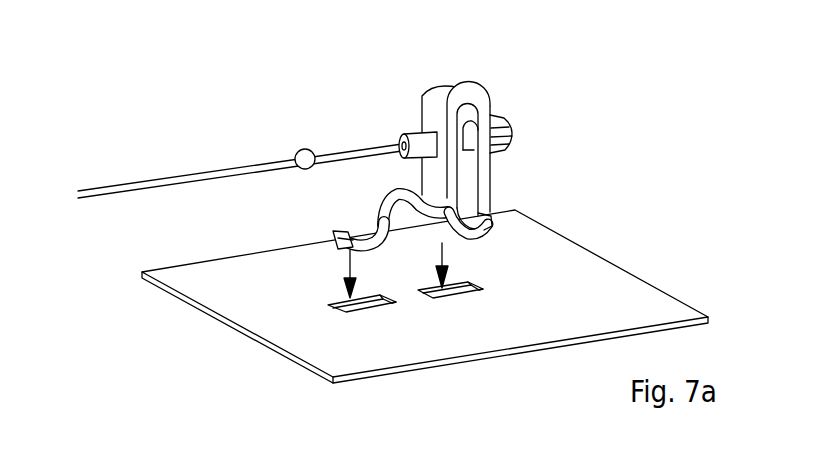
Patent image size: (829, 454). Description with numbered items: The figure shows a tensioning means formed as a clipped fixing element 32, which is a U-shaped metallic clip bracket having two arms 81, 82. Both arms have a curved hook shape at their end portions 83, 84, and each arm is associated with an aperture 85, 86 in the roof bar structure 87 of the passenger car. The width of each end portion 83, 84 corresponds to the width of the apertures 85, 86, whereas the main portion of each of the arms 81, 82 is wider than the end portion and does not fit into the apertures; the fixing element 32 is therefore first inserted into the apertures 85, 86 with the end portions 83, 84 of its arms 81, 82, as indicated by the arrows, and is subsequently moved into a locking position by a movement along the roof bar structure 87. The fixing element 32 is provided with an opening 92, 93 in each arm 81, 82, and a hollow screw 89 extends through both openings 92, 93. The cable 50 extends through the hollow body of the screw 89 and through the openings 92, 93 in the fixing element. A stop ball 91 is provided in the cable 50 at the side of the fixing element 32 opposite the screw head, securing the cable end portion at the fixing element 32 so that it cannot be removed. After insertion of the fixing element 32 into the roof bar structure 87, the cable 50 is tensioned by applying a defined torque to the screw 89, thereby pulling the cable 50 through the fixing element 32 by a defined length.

The fixing element 32 is at (462, 72).
The cable 50 is at (186, 176).
The arm 81 is at (423, 177).
The arm 82 is at (486, 173).
The end portion 83 is at (365, 232).
The end portion 84 is at (473, 233).
The aperture 85 is at (342, 312).
The aperture 86 is at (472, 292).
The roof bar structure 87 is at (597, 277).
The hollow screw 89 is at (498, 121).
The stop ball 91 is at (300, 150).
The opening 92 is at (433, 130).
The opening 93 is at (470, 120).